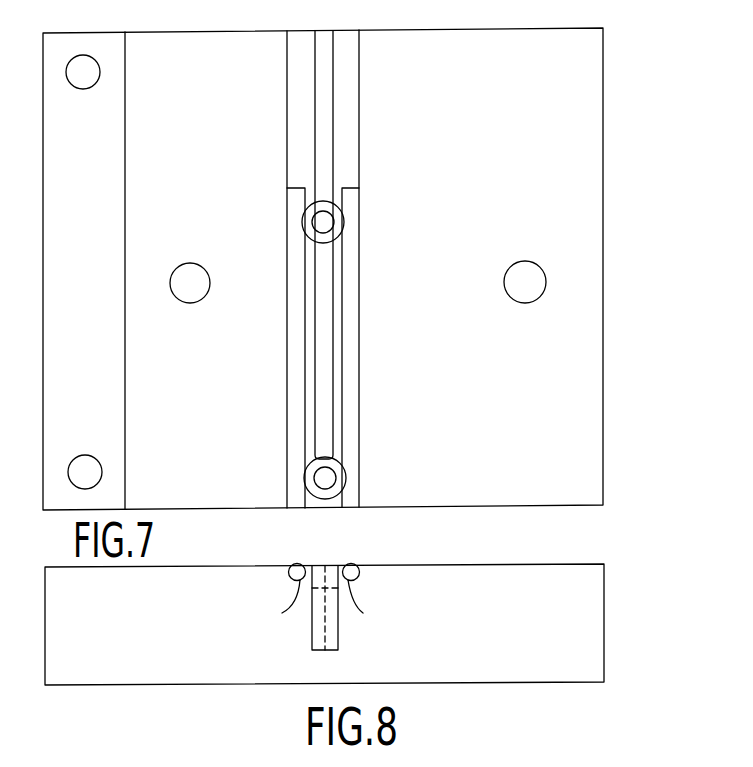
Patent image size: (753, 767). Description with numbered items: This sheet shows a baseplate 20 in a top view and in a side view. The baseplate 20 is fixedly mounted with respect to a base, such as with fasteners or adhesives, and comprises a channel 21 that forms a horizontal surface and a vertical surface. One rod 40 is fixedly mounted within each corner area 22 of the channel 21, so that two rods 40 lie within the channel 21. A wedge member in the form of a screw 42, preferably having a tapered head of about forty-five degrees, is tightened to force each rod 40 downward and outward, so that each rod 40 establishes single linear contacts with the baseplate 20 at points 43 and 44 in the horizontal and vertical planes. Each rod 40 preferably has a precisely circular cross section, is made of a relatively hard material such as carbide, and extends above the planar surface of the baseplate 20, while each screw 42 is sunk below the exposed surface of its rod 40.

In FIG. 7, the baseplate 20 is at (572, 422).
In FIG. 8, the baseplate 20 is at (583, 620).
In FIG. 7, the channel 21 is at (322, 87).
In FIG. 8, the channel 21 is at (325, 608).
In FIG. 8, the corner area 22 is at (285, 583).
In FIG. 7, the rod 40 is at (297, 368).
In FIG. 8, the rod 40 is at (297, 563).
In FIG. 7, the screw 42 is at (323, 222).
In FIG. 8, the screw 42 is at (342, 530).
In FIG. 8, the point 43 is at (288, 574).
In FIG. 8, the point 44 is at (316, 613).